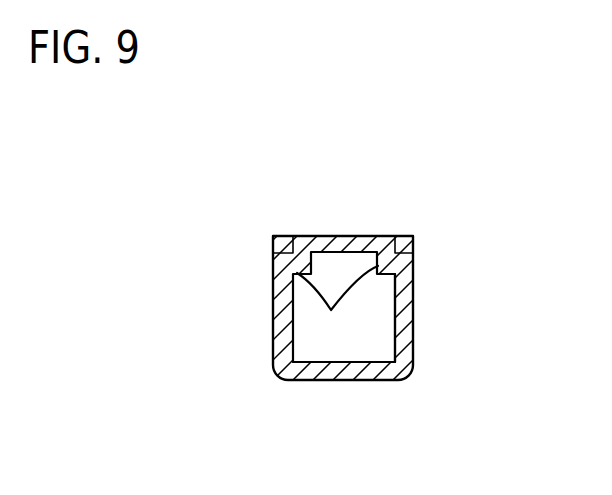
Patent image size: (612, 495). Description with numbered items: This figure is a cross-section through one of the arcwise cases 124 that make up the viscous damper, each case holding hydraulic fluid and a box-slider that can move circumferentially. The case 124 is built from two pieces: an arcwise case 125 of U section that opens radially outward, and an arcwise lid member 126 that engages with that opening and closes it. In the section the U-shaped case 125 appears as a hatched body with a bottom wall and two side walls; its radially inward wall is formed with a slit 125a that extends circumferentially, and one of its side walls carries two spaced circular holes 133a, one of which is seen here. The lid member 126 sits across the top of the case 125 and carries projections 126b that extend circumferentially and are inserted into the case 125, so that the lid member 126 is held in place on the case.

The case 124 is at (306, 247).
The arcwise case 125 is at (402, 375).
The slit 125a is at (322, 369).
The lid member 126 is at (345, 240).
The projection 126b is at (337, 308).
The circular hole 133a is at (402, 303).